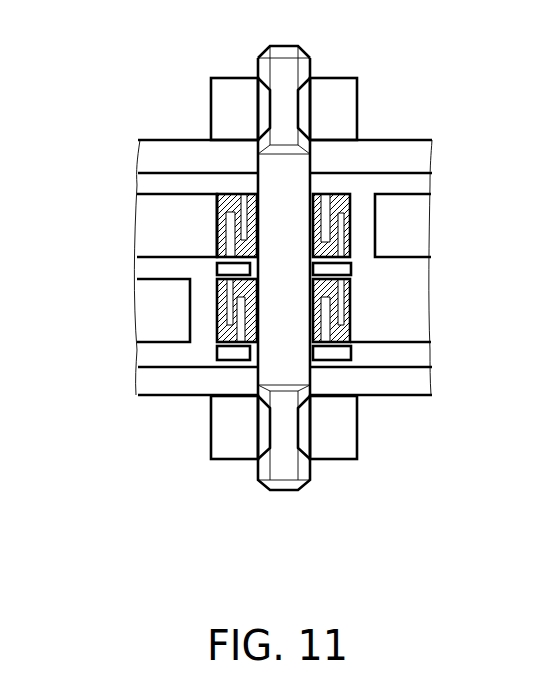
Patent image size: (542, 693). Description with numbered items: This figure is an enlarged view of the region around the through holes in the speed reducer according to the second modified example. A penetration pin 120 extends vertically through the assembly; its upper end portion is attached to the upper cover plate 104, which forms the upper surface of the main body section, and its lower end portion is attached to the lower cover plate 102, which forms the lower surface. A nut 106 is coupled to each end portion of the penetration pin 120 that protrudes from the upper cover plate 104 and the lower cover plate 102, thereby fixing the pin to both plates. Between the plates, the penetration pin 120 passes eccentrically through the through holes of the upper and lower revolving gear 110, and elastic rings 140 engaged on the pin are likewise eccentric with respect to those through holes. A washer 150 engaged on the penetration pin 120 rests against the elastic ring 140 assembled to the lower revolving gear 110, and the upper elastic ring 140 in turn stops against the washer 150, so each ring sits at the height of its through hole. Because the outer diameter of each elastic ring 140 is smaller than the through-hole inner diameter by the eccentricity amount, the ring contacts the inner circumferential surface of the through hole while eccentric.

The lower cover plate 102 is at (195, 397).
The upper cover plate 104 is at (382, 139).
The nut 106 is at (235, 78).
The revolving gear 110 is at (163, 258).
The penetration pin 120 is at (312, 468).
The elastic ring 140 is at (350, 206).
The washer 150 is at (351, 269).